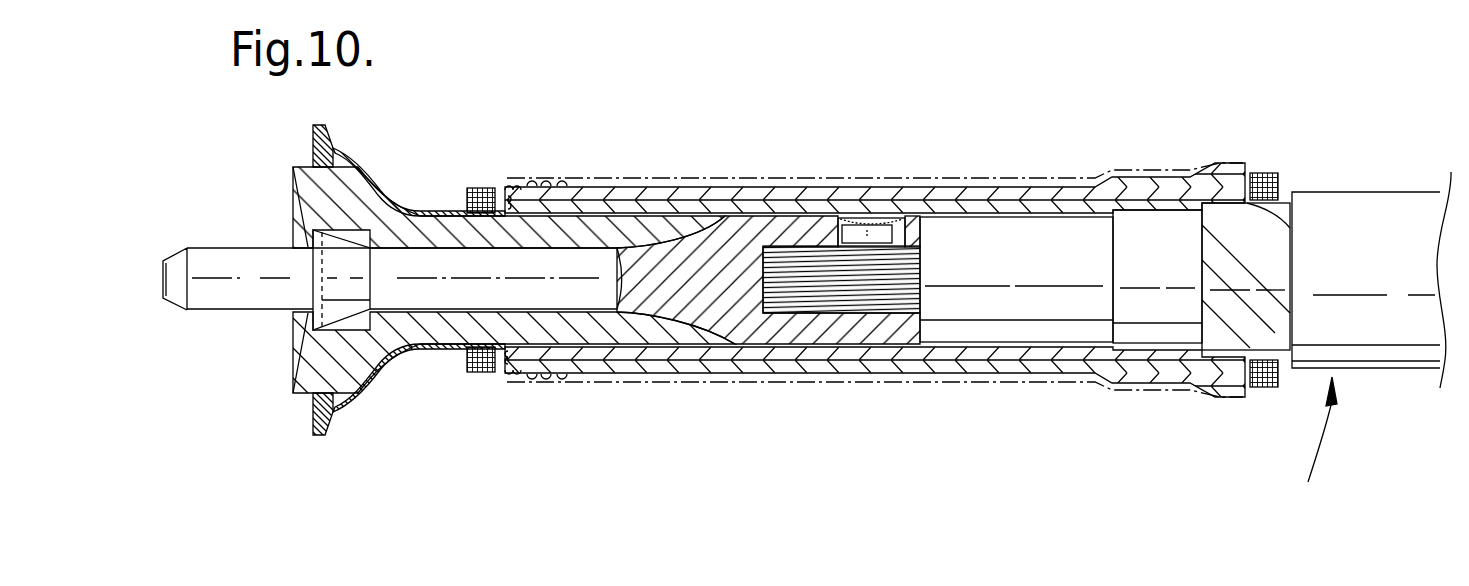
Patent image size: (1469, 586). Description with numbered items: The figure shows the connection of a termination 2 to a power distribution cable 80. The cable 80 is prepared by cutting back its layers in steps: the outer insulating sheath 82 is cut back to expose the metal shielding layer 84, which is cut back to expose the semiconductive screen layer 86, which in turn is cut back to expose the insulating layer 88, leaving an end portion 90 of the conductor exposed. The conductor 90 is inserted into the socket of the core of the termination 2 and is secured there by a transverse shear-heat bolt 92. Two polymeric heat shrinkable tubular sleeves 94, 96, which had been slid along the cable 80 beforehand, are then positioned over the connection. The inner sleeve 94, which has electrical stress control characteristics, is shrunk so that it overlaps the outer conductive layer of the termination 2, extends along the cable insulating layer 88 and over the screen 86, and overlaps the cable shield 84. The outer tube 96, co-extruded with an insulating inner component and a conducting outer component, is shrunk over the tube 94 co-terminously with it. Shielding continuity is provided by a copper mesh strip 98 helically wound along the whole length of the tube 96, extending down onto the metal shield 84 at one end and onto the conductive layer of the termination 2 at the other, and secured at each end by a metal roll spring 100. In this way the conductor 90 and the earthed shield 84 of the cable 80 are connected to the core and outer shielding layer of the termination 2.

The termination 2 is at (393, 153).
The cable 80 is at (1302, 453).
The outer insulating sheath 82 is at (1393, 330).
The metal shielding layer 84 is at (1237, 340).
The semiconductive screen layer 86 is at (1167, 325).
The insulating layer 88 is at (1045, 303).
The end portion of the conductor 90 is at (867, 292).
The transverse shear-heat bolt 92 is at (862, 235).
The inner heat shrinkable tubular sleeve 94 is at (647, 212).
The outer heat shrinkable tubular sleeve 96 is at (733, 190).
The copper mesh strip 98 is at (1045, 180).
The metal roll spring 100 is at (1268, 175).